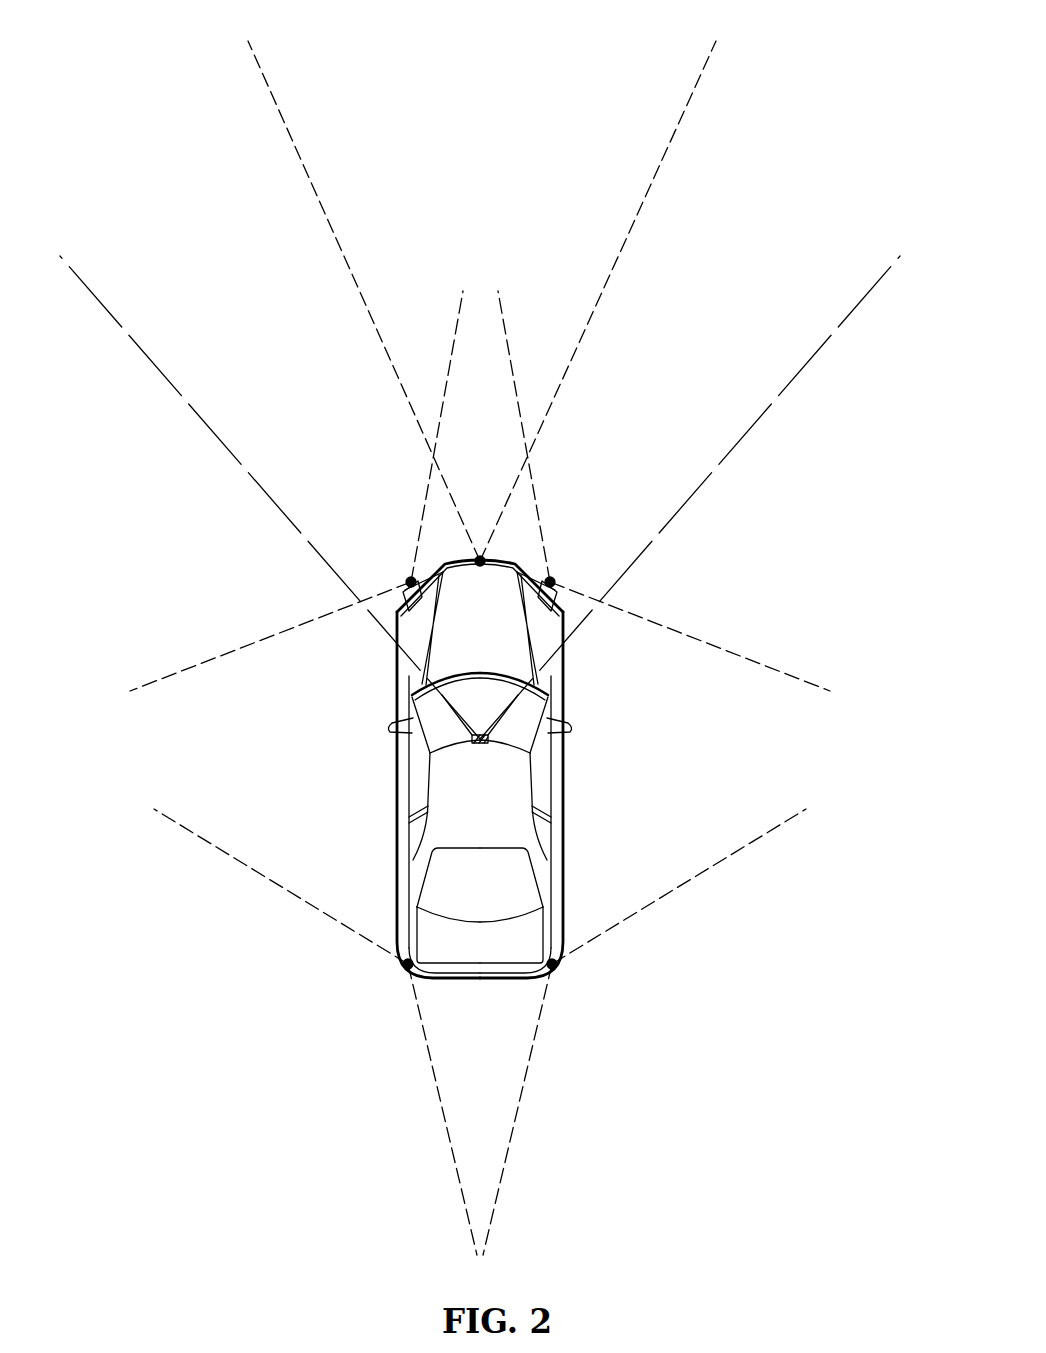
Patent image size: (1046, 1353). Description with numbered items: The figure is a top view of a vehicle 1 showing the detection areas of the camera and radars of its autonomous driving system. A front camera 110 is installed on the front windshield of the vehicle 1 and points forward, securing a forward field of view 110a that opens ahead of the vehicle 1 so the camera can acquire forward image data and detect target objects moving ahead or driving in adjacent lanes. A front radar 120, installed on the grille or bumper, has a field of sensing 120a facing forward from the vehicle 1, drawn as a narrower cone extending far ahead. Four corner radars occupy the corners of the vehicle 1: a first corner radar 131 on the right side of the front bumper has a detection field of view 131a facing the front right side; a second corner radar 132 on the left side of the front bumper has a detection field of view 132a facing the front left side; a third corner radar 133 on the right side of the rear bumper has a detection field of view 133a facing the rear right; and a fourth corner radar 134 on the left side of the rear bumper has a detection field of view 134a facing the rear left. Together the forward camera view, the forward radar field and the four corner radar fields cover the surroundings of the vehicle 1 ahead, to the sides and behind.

The vehicle 1 is at (443, 785).
The front camera 110 is at (489, 738).
The forward field of view 110a is at (851, 311).
The front radar 120 is at (481, 561).
The field of sensing 120a is at (657, 132).
The first corner radar 131 is at (551, 582).
The detection field of view 131a is at (705, 345).
The second corner radar 132 is at (411, 582).
The detection field of view 132a is at (254, 345).
The third corner radar 133 is at (555, 967).
The detection field of view 133a is at (788, 1124).
The fourth corner radar 134 is at (405, 967).
The detection field of view 134a is at (173, 1121).